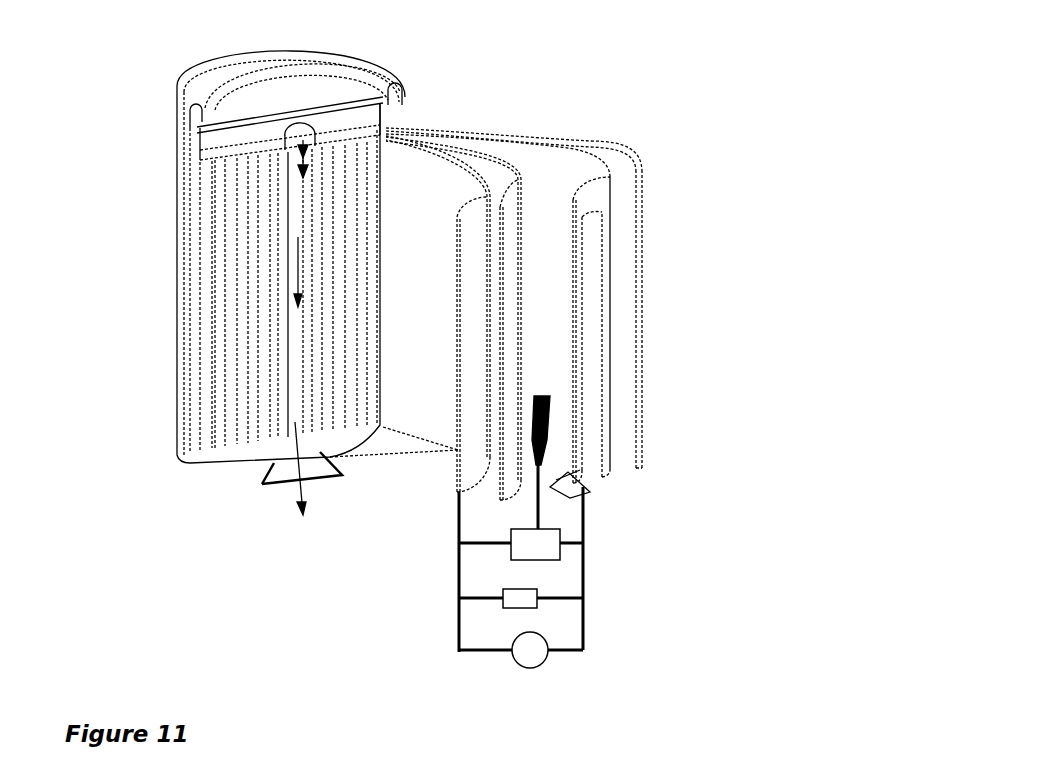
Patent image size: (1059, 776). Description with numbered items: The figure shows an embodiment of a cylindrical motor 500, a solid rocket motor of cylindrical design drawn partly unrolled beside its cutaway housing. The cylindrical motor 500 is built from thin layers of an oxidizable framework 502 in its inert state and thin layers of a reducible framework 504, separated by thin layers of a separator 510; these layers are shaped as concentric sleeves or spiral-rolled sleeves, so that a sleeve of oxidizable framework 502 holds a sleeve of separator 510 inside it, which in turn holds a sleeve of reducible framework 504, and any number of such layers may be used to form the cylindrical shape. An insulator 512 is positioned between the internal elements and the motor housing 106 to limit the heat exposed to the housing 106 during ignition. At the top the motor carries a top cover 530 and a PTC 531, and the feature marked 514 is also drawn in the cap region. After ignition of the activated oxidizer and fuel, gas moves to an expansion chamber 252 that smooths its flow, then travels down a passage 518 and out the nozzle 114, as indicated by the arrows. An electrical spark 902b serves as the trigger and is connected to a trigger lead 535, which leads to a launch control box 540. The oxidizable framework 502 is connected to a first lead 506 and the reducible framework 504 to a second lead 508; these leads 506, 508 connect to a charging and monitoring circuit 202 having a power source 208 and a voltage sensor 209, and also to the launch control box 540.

The cylindrical motor 500 is at (752, 259).
The motor housing 106 is at (172, 272).
The expansion chamber 252 is at (250, 110).
The top cover 530 is at (273, 84).
The vent 514 is at (321, 93).
The PTC 531 is at (402, 91).
The first lead 506 is at (307, 136).
The insulator 512 is at (188, 151).
The passage 518 is at (290, 213).
The nozzle 114 is at (273, 483).
The oxidizable framework 502 is at (444, 429).
The separator 510 is at (510, 169).
The second lead 508 is at (602, 393).
The reducible framework 504 is at (600, 207).
The electrical spark 902b is at (550, 418).
The trigger lead 535 is at (598, 487).
The launch control box 540 is at (531, 551).
The power source 208 is at (540, 606).
The voltage sensor 209 is at (545, 663).
The charging and monitoring circuit 202 is at (477, 665).